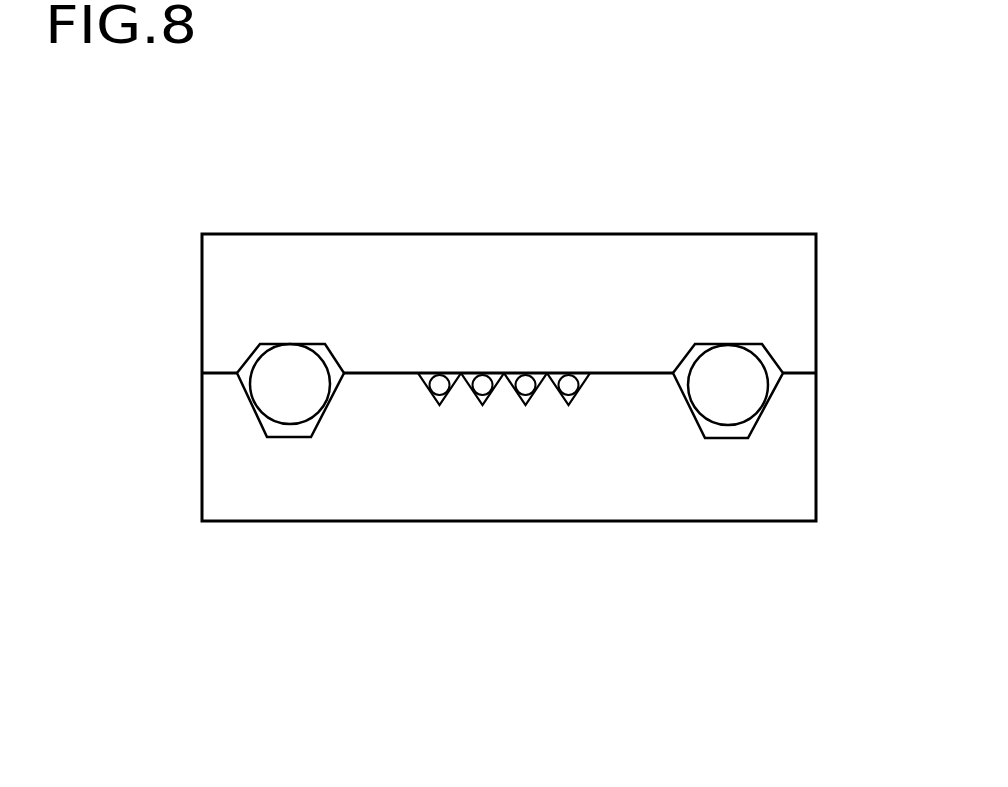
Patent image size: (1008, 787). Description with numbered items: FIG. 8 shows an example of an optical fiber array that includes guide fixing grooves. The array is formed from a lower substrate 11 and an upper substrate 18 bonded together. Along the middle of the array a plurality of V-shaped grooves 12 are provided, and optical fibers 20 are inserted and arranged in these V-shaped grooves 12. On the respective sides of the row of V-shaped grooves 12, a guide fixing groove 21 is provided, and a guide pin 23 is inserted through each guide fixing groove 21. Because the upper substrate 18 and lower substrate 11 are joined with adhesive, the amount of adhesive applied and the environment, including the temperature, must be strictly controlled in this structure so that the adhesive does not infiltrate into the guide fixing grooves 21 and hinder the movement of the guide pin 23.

The lower substrate 11 is at (798, 493).
The V-shaped grooves 12 is at (445, 413).
The upper substrate 18 is at (757, 252).
The optical fibers 20 is at (487, 375).
The guide fixing grooves 21 is at (282, 428).
The guide pin 23 is at (308, 393).